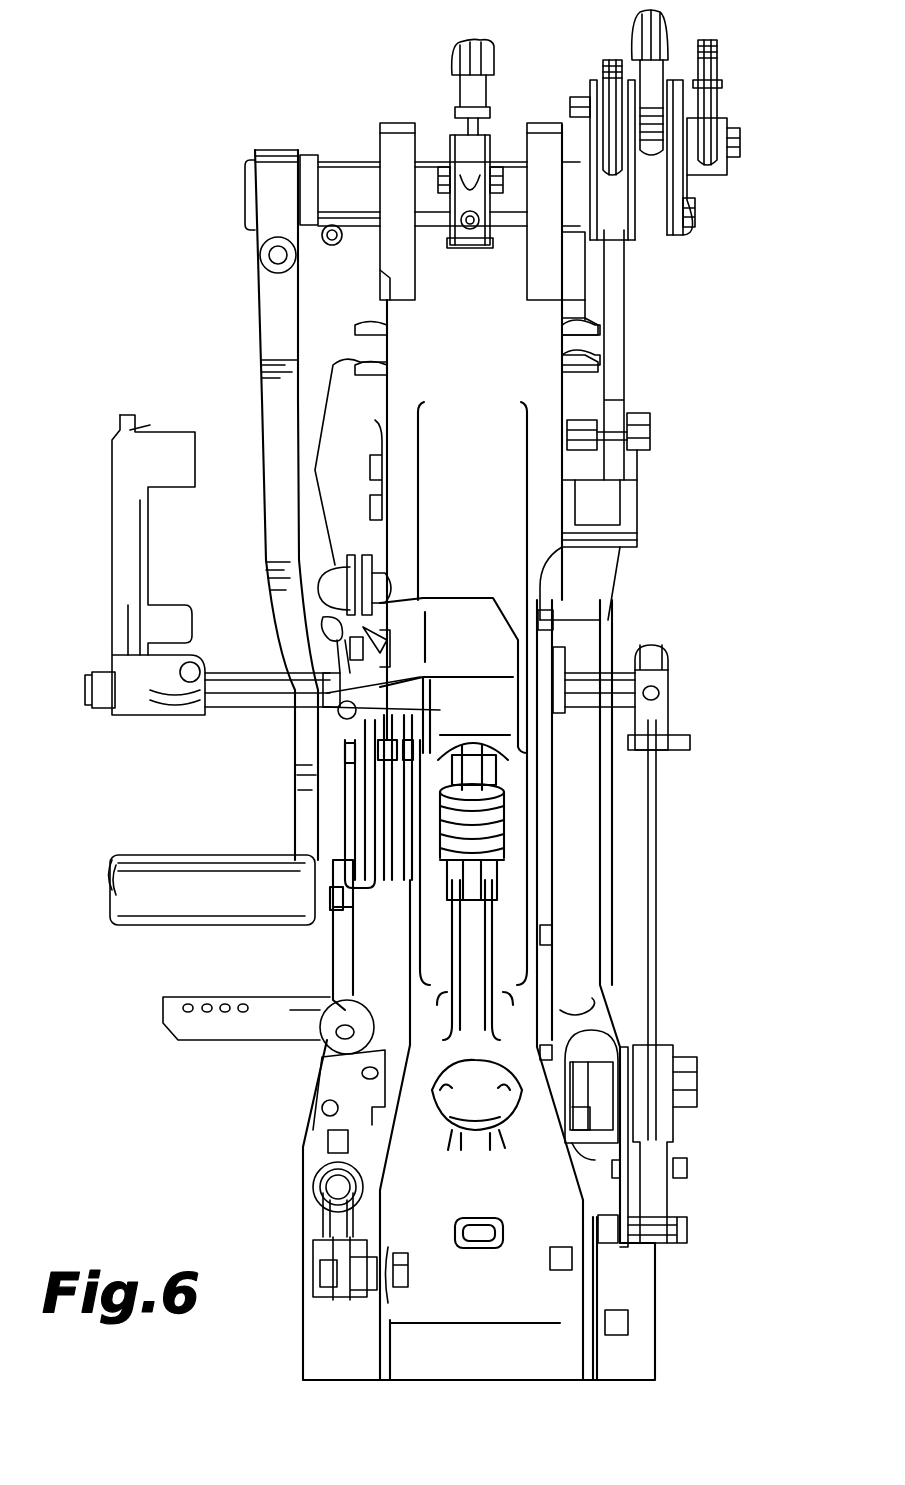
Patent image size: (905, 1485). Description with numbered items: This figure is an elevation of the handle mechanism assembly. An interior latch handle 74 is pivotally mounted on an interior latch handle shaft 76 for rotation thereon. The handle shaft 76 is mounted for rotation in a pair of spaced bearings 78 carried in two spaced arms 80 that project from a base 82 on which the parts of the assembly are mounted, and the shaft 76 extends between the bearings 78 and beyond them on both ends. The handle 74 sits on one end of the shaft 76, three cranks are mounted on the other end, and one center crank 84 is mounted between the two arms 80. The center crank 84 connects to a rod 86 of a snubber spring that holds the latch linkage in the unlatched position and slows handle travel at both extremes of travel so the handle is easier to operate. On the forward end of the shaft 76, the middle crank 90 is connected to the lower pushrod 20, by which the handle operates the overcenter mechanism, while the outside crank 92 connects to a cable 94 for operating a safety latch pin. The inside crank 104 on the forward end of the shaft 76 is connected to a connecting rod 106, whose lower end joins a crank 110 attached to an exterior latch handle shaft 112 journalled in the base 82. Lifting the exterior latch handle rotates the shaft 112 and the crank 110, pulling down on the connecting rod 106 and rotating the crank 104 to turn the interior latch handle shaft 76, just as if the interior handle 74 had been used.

The lower pushrod 20 is at (668, 48).
The interior latch handle 74 is at (300, 847).
The interior latch handle shaft 76 is at (335, 173).
The bearings 78 is at (380, 250).
The arms 80 is at (395, 128).
The base 82 is at (613, 587).
The center crank 84 is at (487, 250).
The rod 86 is at (490, 72).
The middle crank 90 is at (712, 38).
The outside crank 92 is at (727, 117).
The cable 94 is at (717, 66).
The inside crank 104 is at (610, 72).
The connecting rod 106 is at (615, 298).
The crank 110 is at (640, 463).
The exterior latch handle shaft 112 is at (645, 520).